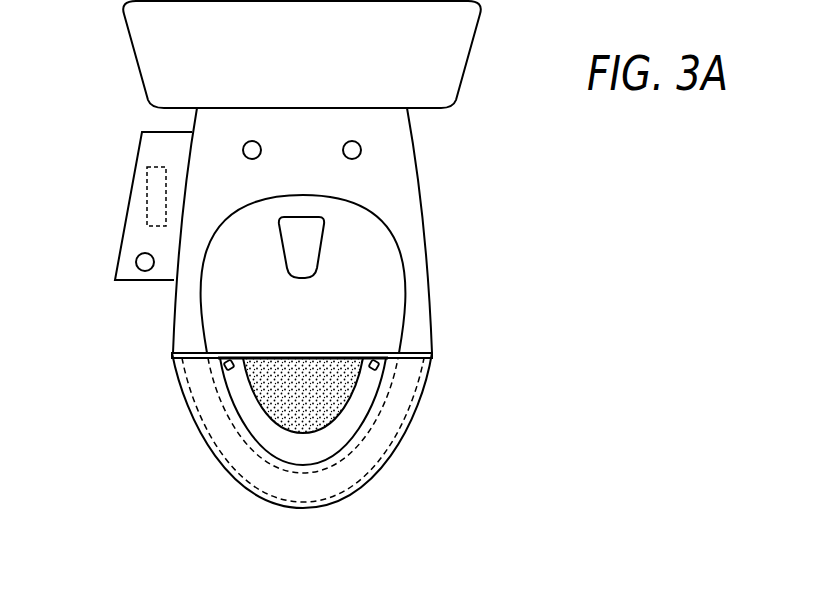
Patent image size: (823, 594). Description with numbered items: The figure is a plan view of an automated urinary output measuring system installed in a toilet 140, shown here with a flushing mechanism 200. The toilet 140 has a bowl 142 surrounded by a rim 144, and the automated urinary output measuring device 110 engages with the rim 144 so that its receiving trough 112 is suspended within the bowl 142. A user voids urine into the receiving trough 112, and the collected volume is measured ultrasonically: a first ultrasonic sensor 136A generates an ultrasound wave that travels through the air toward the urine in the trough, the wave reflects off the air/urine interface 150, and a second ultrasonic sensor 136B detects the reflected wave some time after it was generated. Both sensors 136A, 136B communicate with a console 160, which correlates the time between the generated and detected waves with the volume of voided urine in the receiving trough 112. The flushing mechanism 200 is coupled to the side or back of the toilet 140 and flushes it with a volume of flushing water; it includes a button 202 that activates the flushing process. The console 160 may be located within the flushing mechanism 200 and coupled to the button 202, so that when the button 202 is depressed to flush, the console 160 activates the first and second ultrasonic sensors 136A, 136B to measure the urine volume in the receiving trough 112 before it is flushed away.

The automated urinary output measuring device 110 is at (374, 535).
The receiving trough 112 is at (247, 425).
The first ultrasonic sensor 136A is at (224, 363).
The second ultrasonic sensor 136B is at (378, 363).
The toilet 140 is at (378, 148).
The bowl 142 is at (386, 297).
The rim 144 is at (386, 447).
The air/urine interface 150 is at (306, 375).
The console 160 is at (152, 167).
The flushing mechanism 200 is at (130, 203).
The button 202 is at (145, 272).